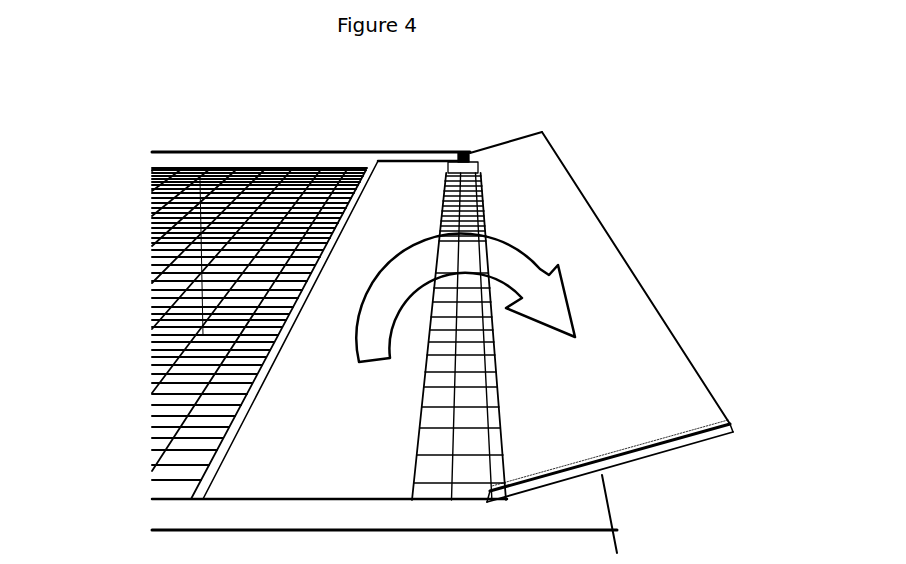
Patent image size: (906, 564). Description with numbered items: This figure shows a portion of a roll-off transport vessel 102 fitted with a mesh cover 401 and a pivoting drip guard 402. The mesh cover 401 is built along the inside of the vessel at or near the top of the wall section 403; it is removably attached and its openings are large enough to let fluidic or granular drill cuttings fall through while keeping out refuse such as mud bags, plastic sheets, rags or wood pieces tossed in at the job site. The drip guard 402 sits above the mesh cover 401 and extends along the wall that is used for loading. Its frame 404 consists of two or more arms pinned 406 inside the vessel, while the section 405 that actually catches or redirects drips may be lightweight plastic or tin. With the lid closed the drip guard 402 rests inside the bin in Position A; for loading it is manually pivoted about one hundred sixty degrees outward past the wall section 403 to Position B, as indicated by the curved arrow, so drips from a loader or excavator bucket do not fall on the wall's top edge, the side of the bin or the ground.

The transport vessel 102 is at (134, 132).
The mesh cover 401 is at (150, 303).
The drip guard 402 is at (651, 247).
The wall section 403 is at (588, 495).
The drip guard frame 404 is at (721, 444).
The drip catching section 405 is at (554, 217).
The pin 406 is at (467, 156).